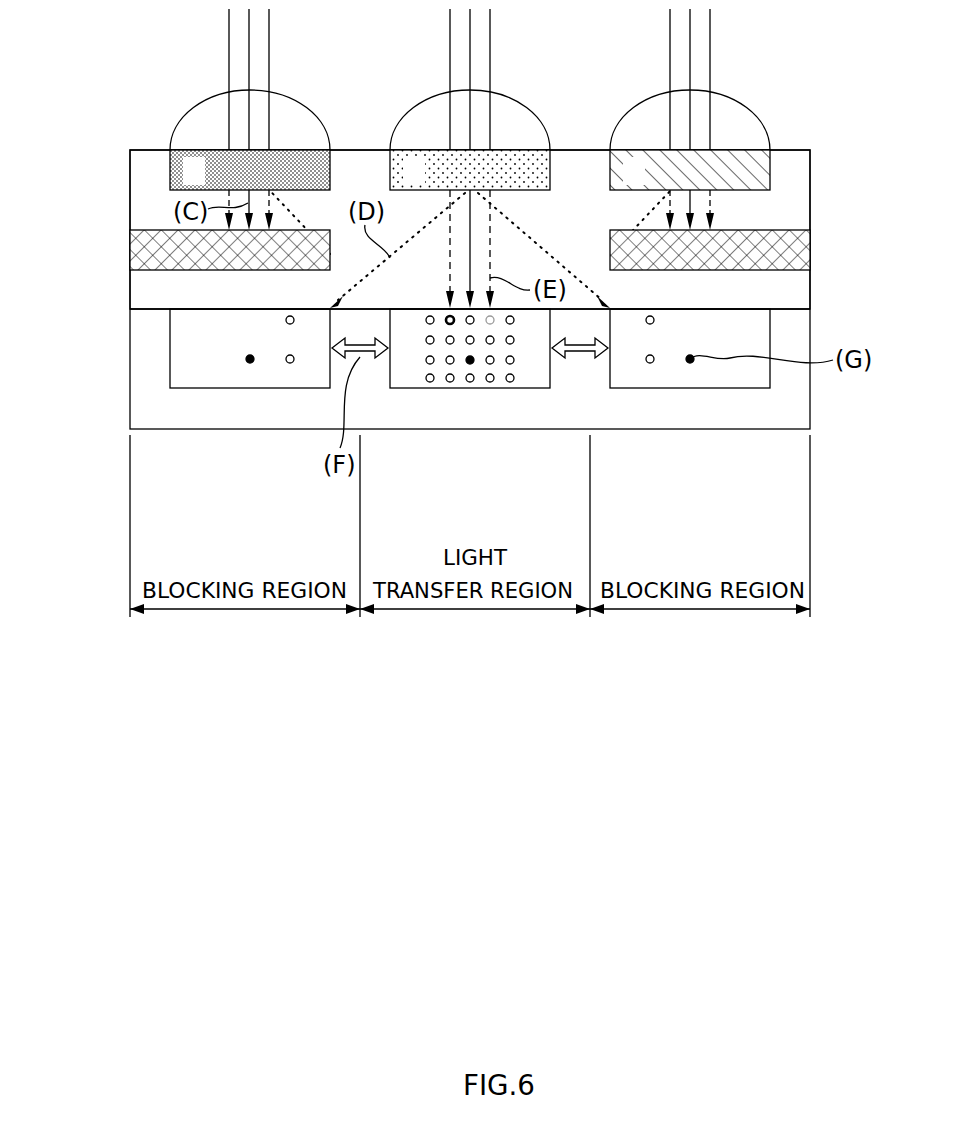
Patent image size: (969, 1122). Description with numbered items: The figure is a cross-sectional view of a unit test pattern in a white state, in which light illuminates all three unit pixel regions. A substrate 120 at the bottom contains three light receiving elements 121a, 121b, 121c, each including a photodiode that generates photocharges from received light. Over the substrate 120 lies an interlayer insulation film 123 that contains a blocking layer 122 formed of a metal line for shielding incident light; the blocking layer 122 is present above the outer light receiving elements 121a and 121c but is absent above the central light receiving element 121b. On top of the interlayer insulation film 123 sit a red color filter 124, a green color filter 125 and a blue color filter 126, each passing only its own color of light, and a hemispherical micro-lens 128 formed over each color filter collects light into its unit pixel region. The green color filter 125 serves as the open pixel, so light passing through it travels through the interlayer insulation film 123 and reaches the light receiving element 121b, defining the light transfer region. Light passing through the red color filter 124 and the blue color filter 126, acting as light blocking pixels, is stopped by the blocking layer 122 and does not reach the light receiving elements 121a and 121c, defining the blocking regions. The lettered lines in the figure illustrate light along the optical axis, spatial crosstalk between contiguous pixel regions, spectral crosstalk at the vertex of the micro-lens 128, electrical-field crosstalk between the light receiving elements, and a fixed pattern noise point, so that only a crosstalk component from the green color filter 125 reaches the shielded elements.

The substrate 120 is at (128, 398).
The light receiving element 121a is at (250, 390).
The light receiving element 121b is at (470, 390).
The light receiving element 121c is at (690, 390).
The blocking layer 122 is at (130, 247).
The interlayer insulation film 123 is at (130, 208).
The red color filter 124 is at (320, 167).
The green color filter 125 is at (540, 167).
The blue color filter 126 is at (760, 167).
The micro-lens 128 is at (725, 115).